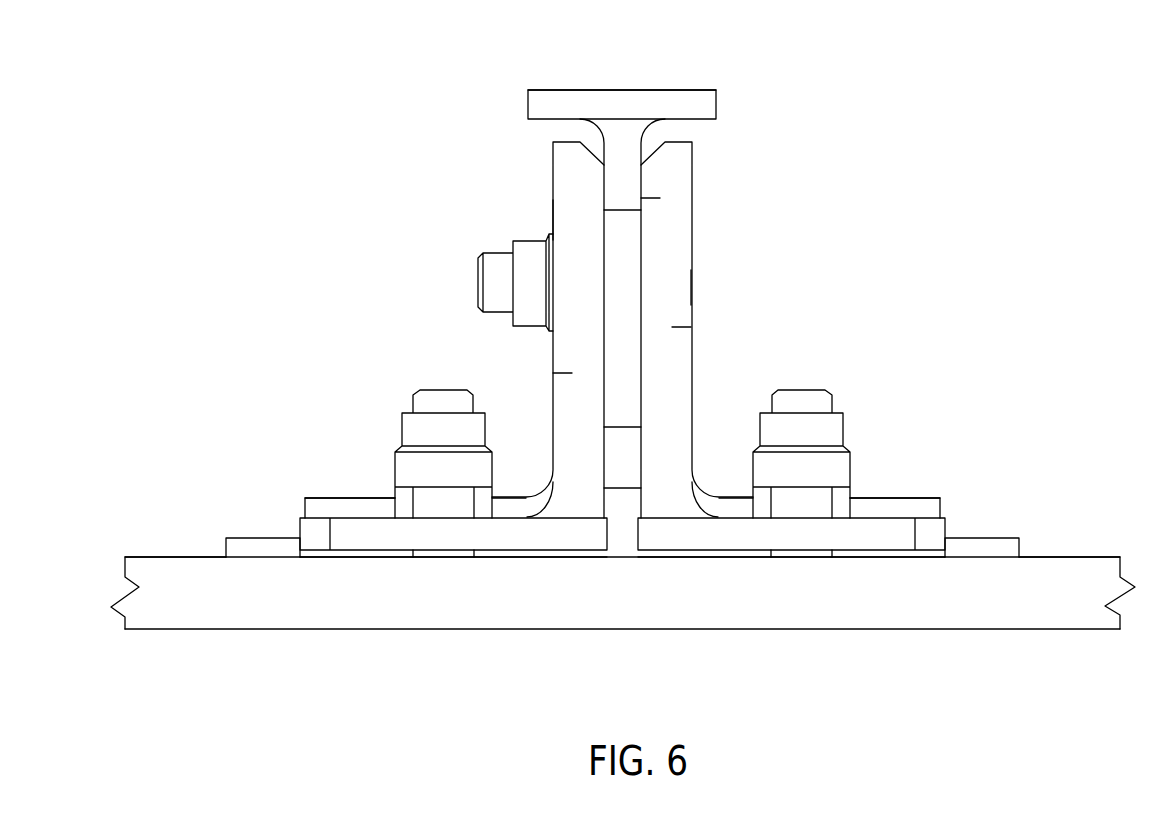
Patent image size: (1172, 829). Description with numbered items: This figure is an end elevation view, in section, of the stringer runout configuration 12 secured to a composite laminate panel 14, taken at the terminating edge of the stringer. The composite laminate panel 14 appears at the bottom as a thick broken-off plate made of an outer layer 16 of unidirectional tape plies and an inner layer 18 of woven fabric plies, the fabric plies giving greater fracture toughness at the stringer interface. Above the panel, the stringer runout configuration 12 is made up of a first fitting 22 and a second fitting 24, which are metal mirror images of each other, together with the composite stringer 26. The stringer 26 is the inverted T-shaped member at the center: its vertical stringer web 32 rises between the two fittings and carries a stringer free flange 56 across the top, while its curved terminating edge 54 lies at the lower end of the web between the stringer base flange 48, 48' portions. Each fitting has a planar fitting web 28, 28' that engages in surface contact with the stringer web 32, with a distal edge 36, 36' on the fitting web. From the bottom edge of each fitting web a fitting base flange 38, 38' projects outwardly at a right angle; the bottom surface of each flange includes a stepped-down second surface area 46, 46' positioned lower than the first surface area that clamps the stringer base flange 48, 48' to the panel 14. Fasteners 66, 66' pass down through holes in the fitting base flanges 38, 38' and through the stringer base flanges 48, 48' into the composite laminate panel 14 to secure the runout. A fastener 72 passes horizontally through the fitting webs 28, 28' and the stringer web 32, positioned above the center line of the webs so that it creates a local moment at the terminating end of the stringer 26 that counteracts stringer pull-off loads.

The stringer runout configuration 12 is at (888, 118).
The composite laminate panel 14 is at (1085, 557).
The outer layer 16 is at (225, 629).
The inner layer 18 is at (173, 557).
The first fitting 22 is at (691, 240).
The second fitting 24 is at (553, 148).
The stringer 26 is at (692, 90).
The fitting web 28 is at (738, 285).
The fitting web 28' is at (500, 215).
The stringer web 32 is at (660, 198).
The distal edge 36 is at (719, 319).
The distal edge 36' is at (527, 364).
The fitting base flange 38 is at (841, 487).
The fitting base flange 38' is at (405, 487).
The second surface area 46 is at (797, 600).
The second surface area 46' is at (454, 599).
The stringer base flange 48 is at (997, 526).
The stringer base flange 48' is at (250, 527).
The terminating edge 54 is at (620, 282).
The stringer free flange 56 is at (568, 90).
The fastener 66 is at (828, 464).
The fastener 66' is at (417, 464).
The fastener 72 is at (478, 272).